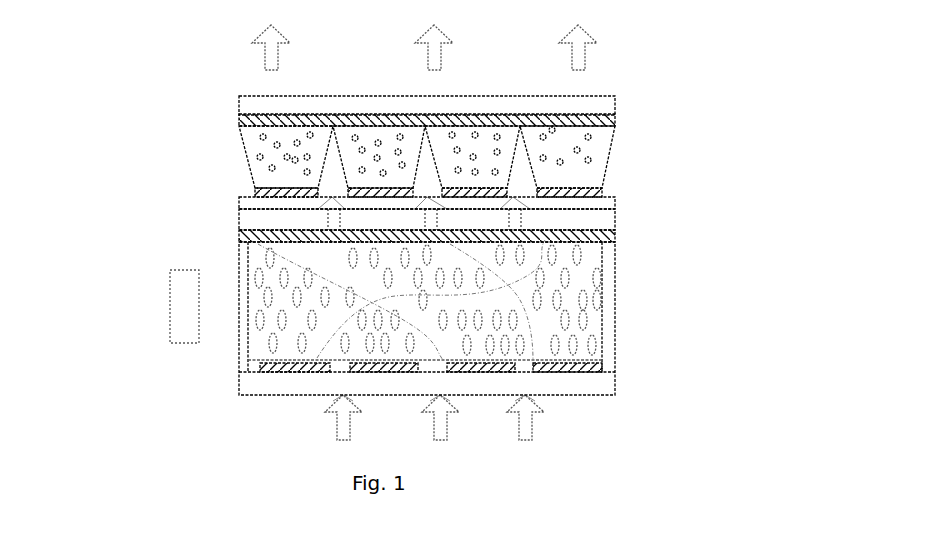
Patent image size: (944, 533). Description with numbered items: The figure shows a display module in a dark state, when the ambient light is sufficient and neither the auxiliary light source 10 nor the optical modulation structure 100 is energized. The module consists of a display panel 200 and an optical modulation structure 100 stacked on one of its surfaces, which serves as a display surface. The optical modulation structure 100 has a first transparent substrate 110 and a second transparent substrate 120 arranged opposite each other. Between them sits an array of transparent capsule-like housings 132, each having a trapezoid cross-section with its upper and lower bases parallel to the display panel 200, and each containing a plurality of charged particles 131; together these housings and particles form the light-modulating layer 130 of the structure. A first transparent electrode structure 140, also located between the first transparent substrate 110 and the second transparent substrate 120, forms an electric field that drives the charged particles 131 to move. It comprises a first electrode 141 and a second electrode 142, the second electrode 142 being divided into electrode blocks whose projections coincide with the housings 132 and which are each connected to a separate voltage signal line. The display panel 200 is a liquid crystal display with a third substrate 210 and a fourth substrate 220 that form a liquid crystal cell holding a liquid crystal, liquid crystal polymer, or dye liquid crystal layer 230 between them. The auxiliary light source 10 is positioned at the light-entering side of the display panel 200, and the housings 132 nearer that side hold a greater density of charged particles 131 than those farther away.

The auxiliary light source 10 is at (180, 311).
The optical modulation structure 100 is at (447, 139).
The first transparent substrate 110 is at (617, 101).
The second transparent substrate 120 is at (617, 201).
The color conversion structure 130 is at (323, 156).
The charged particle 131 is at (262, 172).
The transparent capsule-like housing 132 is at (244, 155).
The first transparent electrode structure 140 is at (510, 155).
The first electrode 141 is at (615, 120).
The second electrode 142 is at (602, 179).
The display panel 200 is at (551, 302).
The third substrate 210 is at (617, 224).
The fourth substrate 220 is at (617, 384).
The liquid crystal layer 230 is at (572, 294).